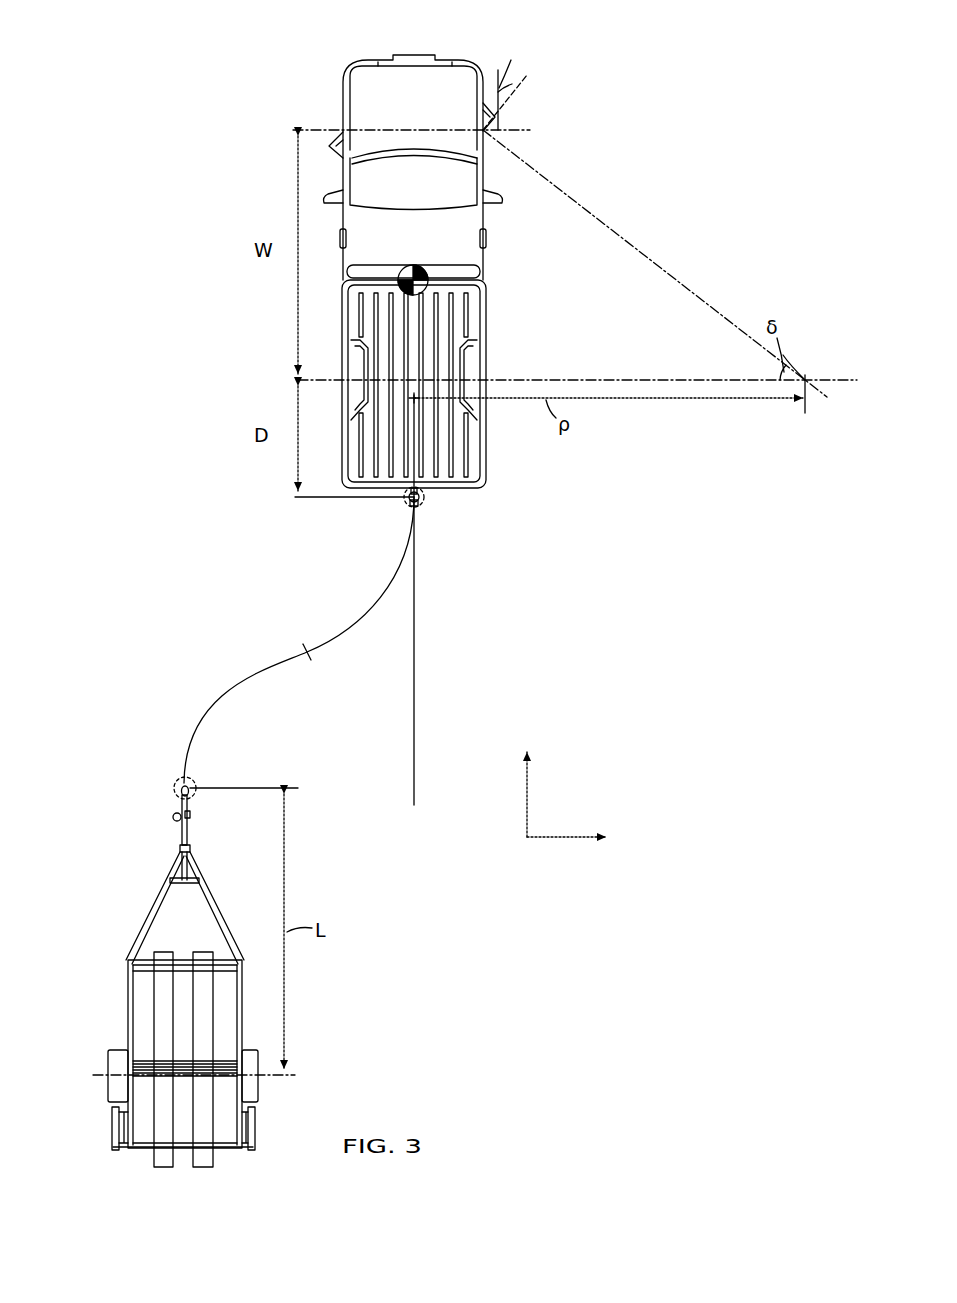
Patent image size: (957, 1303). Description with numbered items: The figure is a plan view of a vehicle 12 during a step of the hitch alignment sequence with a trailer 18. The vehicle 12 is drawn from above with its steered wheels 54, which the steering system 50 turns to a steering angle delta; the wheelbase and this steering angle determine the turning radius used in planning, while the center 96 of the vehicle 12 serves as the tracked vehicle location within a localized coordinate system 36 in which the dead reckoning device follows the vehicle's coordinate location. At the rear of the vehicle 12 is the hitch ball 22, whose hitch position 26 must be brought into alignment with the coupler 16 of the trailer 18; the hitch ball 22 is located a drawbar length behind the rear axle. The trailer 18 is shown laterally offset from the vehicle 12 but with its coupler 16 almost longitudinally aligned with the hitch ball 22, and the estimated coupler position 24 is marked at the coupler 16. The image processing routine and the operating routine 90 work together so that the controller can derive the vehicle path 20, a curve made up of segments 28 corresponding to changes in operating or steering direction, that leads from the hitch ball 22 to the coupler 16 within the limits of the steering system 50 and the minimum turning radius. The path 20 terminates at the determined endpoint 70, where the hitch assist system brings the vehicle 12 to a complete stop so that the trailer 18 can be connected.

The vehicle 12 is at (322, 58).
The steered wheels 54 is at (336, 140).
The steering system 50 is at (500, 160).
The center of vehicle 96 is at (398, 292).
The endpoint 70 is at (421, 499).
The hitch ball 22 is at (406, 499).
The hitch position 26 is at (421, 507).
The segments 28 is at (368, 623).
The operating routine 90 is at (258, 612).
The vehicle path 20 is at (222, 652).
The coupler position 24 is at (197, 781).
The coupler 16 is at (191, 795).
The trailer 18 is at (122, 998).
The localized coordinate system 36 is at (568, 855).